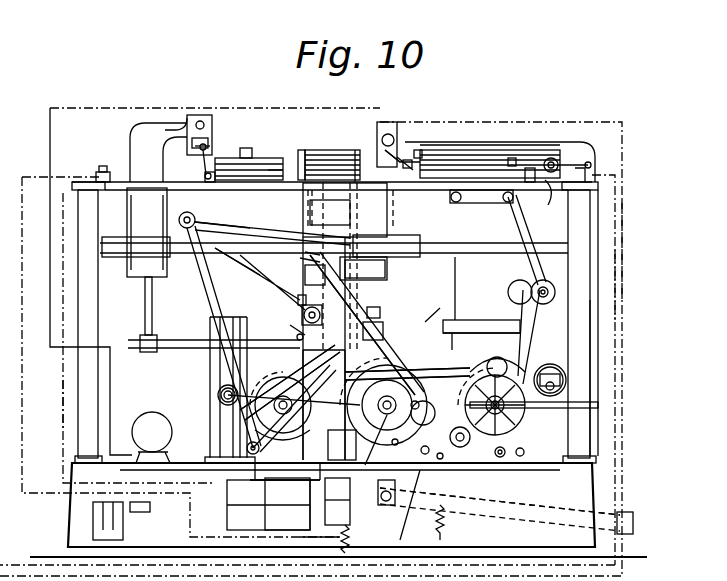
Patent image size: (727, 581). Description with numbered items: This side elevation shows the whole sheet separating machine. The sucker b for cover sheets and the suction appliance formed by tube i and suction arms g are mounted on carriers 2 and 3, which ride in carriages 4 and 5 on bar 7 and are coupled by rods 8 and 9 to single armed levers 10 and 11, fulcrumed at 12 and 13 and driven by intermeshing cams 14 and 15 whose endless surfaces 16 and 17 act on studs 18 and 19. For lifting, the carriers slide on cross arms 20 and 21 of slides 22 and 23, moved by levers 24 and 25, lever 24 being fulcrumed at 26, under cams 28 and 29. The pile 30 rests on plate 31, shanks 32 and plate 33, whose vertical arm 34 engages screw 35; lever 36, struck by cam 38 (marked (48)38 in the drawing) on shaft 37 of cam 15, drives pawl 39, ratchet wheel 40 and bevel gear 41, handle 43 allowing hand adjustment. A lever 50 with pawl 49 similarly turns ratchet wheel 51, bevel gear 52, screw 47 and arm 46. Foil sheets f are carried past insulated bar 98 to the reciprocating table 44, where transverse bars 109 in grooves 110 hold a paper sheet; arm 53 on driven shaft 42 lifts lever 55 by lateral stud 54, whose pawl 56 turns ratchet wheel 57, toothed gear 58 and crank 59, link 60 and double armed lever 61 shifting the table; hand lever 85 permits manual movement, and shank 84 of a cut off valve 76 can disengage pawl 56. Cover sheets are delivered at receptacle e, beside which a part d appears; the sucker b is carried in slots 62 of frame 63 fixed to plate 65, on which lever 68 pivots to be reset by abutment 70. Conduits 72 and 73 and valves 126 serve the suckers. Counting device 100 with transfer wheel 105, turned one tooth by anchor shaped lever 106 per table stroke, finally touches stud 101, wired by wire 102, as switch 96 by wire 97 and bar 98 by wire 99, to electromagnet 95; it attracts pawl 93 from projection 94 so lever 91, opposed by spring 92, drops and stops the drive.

The plate 65 is at (200, 115).
The lateral frame 63 is at (166, 132).
The double armed lever 61 is at (206, 145).
The transverse slot 62 is at (195, 146).
The single armed lever 68 is at (250, 143).
The carrier 2 is at (158, 152).
The sucker b is at (200, 157).
The receptacle e is at (249, 167).
The plate d is at (272, 170).
The plate 31 is at (305, 160).
The pile 30 is at (330, 165).
The suction arm g is at (355, 150).
The carrier 3 is at (385, 150).
The tube i is at (390, 128).
The groove 110 is at (418, 150).
The insulated metal bar 98 is at (408, 160).
The table 44 is at (452, 158).
The foil sheet f is at (480, 125).
The counting device 100 is at (560, 165).
The stud 101 is at (600, 158).
The switch 96 is at (100, 172).
The abutment 70 is at (207, 182).
The rod 8 is at (215, 222).
The rod 9 is at (245, 226).
The shank 32 is at (300, 195).
The plate 33 is at (360, 210).
The transverse bar 109 is at (450, 195).
The anchor shaped lever 106 is at (530, 182).
The transfer wheel 105 is at (549, 203).
The carriage 4 is at (140, 210).
The bar 7 is at (225, 248).
The single armed lever 11 is at (200, 285).
The carriage 5 is at (420, 240).
The wire 99 is at (622, 247).
The wire 102 is at (615, 290).
The screw 35 is at (300, 262).
The vertical arm 34 is at (305, 255).
The handle 43 is at (310, 270).
The screw 47 is at (385, 280).
The bevel gear 41 is at (355, 300).
The ratchet wheel 40 is at (298, 300).
The pawl 39 is at (302, 312).
The pawl 49 is at (290, 328).
The lever 36 is at (297, 335).
The arm 46 is at (385, 318).
The ratchet wheel 51 is at (438, 318).
The vertically movable slide 23 is at (470, 318).
The cross arm 21 is at (500, 333).
The cross arm 20 is at (181, 340).
The vertically movable slide 22 is at (222, 352).
The cam 38 is at (218, 392).
The roller 48 is at (228, 395).
The endless surface 17 is at (270, 385).
The single armed lever 10 is at (395, 352).
The single armed lever 24 is at (415, 372).
The cam 14 is at (435, 378).
The fulcrum 26 is at (493, 358).
The toothed gear 58 is at (550, 367).
The crank 59 is at (562, 374).
The link 60 is at (562, 386).
The stud 19 is at (240, 410).
The shaft 37 is at (245, 425).
The stud 18 is at (383, 401).
The single armed lever 25 is at (420, 400).
The driven shaft 42 is at (423, 413).
The lever 55 is at (458, 436).
The shank 84 is at (515, 425).
The ratchet wheel 57 is at (520, 440).
The hand lever 85 is at (600, 418).
The suction conduit 73 is at (600, 445).
The wire 97 is at (63, 402).
The suction conduit 72 is at (110, 375).
The cut off valve 76 is at (525, 472).
The bevel gear 52 is at (324, 405).
The lever 50 is at (300, 428).
The cam 28 is at (345, 432).
The cam 15 is at (310, 464).
The fulcrum 13 is at (275, 488).
The electromagnet 95 is at (275, 510).
The projection 94 is at (345, 494).
The pawl 93 is at (333, 514).
The arm 53 is at (380, 505).
The cam 29 is at (365, 465).
The endless surface 16 is at (396, 446).
The fulcrum 12 is at (425, 454).
The lateral stud 54 is at (441, 459).
The pawl 56 is at (500, 458).
The lever 91 is at (560, 510).
The spring 92 is at (438, 520).
The valve 126 is at (124, 520).